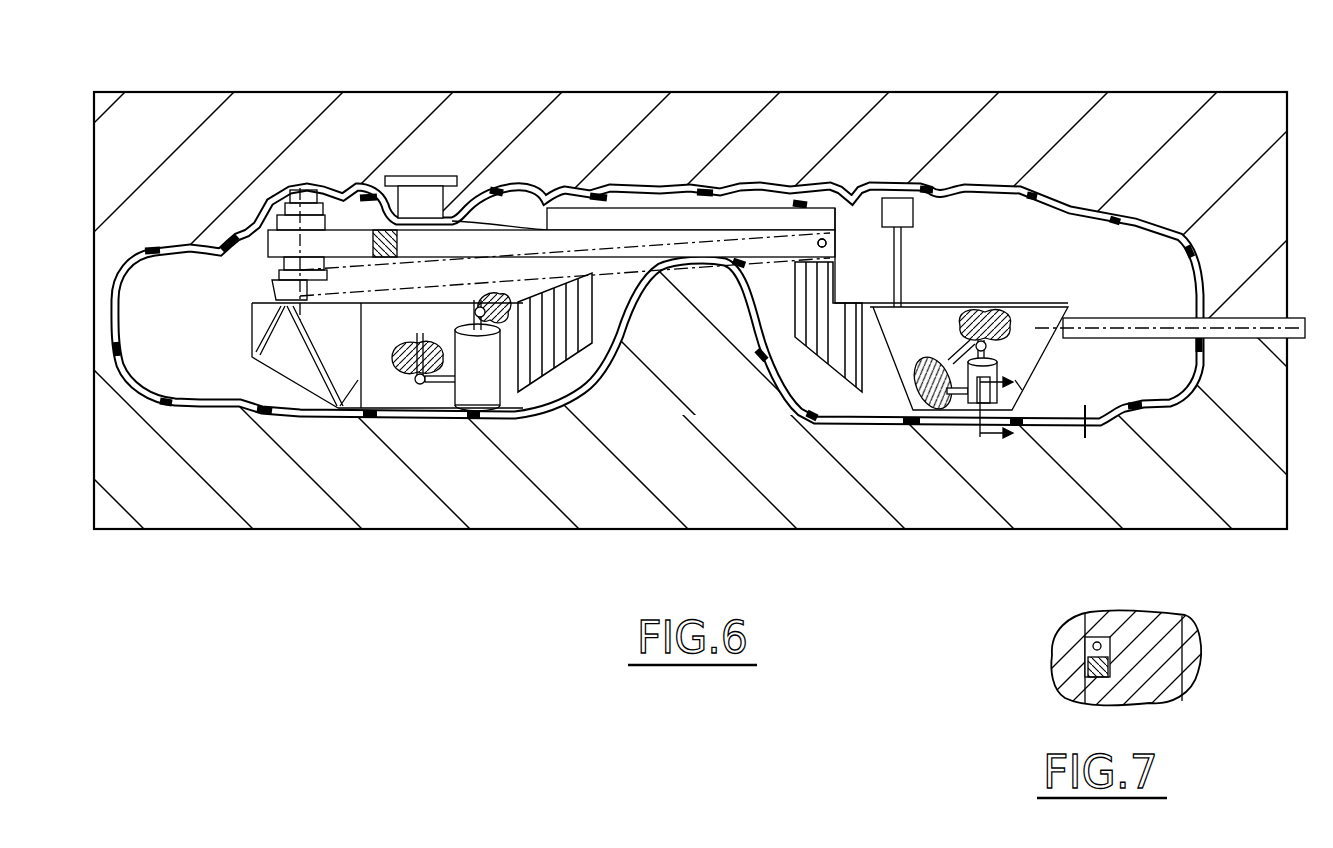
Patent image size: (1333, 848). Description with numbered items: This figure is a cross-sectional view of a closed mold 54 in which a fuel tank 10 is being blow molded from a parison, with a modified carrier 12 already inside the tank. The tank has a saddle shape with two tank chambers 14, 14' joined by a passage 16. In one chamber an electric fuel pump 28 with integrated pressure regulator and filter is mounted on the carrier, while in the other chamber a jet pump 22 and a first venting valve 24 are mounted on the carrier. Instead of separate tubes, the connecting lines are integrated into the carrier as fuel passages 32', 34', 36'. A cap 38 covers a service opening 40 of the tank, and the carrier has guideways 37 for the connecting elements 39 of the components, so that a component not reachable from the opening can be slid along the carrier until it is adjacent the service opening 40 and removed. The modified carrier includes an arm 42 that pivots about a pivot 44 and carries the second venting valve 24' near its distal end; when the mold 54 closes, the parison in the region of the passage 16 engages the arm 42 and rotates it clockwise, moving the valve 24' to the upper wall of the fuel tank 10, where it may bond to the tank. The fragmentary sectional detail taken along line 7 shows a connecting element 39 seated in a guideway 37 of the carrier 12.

In FIG. 6, the mold 54 is at (1193, 75).
In FIG. 6, the fuel tank 10 is at (888, 184).
In FIG. 6, the tank chamber 14 is at (657, 304).
In FIG. 6, the tank chamber 14' is at (1104, 438).
In FIG. 6, the passage 16 is at (700, 267).
In FIG. 6, the cap 38 is at (413, 178).
In FIG. 6, the service opening 40 is at (430, 198).
In FIG. 6, the arm 42 is at (610, 235).
In FIG. 6, the pivot 44 is at (822, 238).
In FIG. 6, the fuel passage 32' is at (452, 225).
In FIG. 6, the second venting valve 24' is at (253, 254).
In FIG. 6, the first venting valve 24 is at (930, 252).
In FIG. 6, the fuel passage 36' is at (669, 389).
In FIG. 6, the fuel passage 34' is at (757, 358).
In FIG. 6, the electric fuel pump 28 is at (468, 398).
In FIG. 6, the jet pump 22 is at (967, 410).
In FIG. 7, the jet pump 22 is at (1060, 642).
In FIG. 6, the section line 7— 7 is at (1001, 413).
In FIG. 7, the carrier 12 is at (1167, 620).
In FIG. 7, the guideway 37 is at (1098, 642).
In FIG. 7, the connecting element 39 is at (1095, 660).